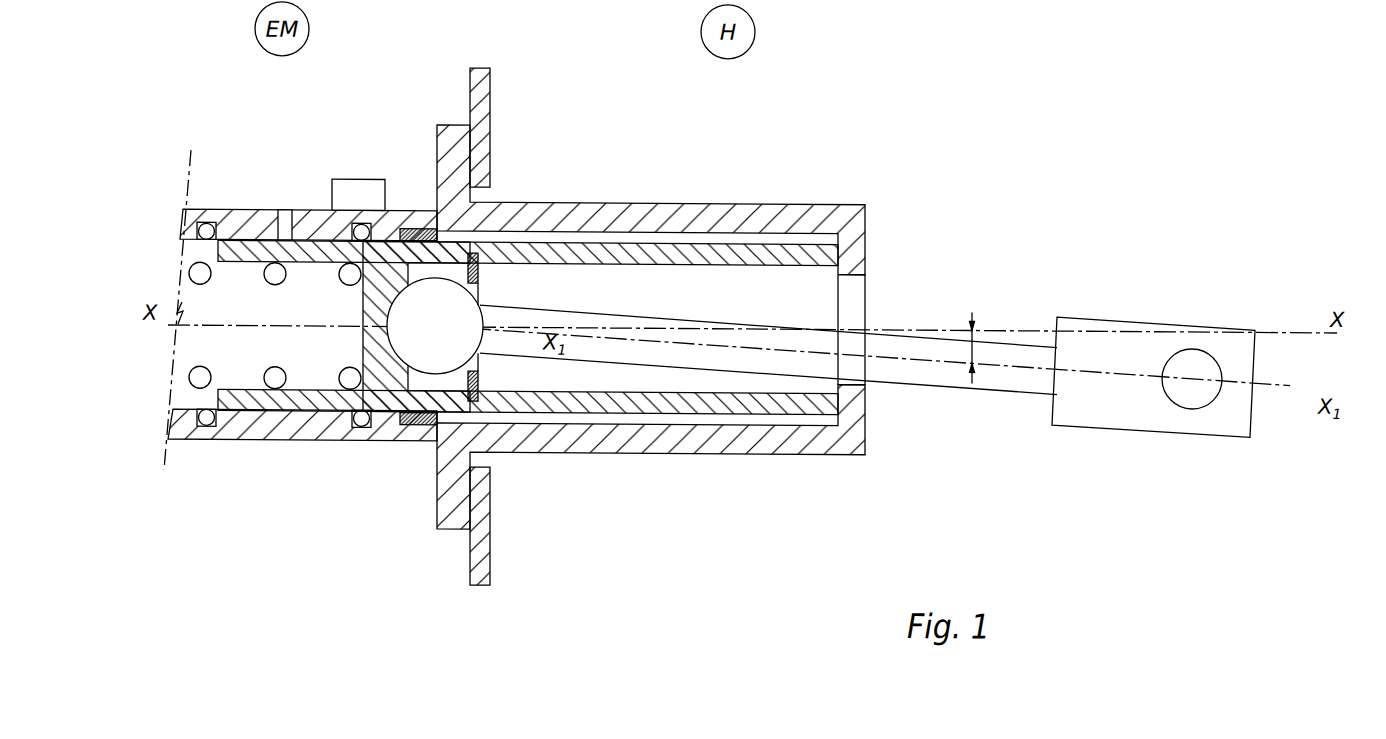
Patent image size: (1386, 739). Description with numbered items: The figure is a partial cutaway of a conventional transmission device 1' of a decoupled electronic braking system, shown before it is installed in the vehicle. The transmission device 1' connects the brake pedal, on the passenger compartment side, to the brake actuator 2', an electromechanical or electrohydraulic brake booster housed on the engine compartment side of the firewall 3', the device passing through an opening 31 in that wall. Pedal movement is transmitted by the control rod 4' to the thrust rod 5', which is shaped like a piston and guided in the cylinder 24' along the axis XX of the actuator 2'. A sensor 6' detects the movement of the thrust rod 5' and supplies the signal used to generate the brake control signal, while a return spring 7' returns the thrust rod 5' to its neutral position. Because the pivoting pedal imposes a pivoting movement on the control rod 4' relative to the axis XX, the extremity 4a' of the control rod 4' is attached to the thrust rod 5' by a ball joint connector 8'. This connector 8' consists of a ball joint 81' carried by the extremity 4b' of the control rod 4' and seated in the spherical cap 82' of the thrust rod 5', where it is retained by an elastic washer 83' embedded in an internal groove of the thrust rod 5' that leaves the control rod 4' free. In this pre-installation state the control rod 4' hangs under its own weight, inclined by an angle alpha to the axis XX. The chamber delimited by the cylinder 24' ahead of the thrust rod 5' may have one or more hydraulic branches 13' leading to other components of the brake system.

The transmission device 1' is at (686, 322).
The brake actuator 2' is at (277, 298).
The firewall 3' is at (507, 321).
The opening 31 is at (478, 190).
The control rod 4' is at (867, 267).
The extremity of control rod 4a' is at (768, 271).
The extremity of control rod 4b' is at (1088, 293).
The thrust rod 5' is at (651, 328).
The sensor 6' is at (358, 194).
The return spring 7' is at (243, 320).
The ball joint connector 8' is at (444, 384).
The ball joint 81' is at (430, 382).
The spherical cap 82' is at (395, 364).
The elastic washer 83' is at (521, 372).
The hydraulic branches 13' is at (269, 198).
The cylinder 24' is at (277, 399).